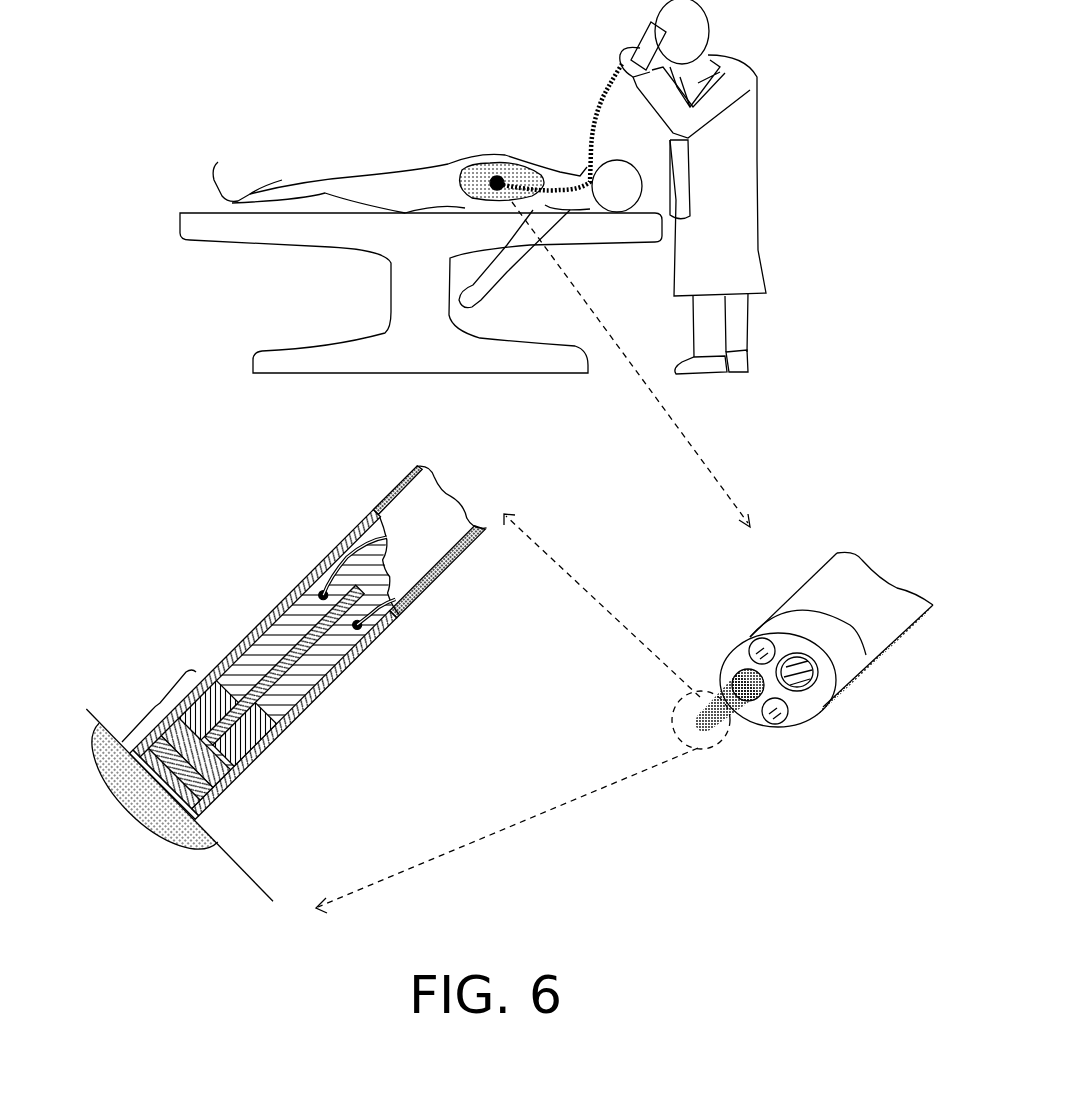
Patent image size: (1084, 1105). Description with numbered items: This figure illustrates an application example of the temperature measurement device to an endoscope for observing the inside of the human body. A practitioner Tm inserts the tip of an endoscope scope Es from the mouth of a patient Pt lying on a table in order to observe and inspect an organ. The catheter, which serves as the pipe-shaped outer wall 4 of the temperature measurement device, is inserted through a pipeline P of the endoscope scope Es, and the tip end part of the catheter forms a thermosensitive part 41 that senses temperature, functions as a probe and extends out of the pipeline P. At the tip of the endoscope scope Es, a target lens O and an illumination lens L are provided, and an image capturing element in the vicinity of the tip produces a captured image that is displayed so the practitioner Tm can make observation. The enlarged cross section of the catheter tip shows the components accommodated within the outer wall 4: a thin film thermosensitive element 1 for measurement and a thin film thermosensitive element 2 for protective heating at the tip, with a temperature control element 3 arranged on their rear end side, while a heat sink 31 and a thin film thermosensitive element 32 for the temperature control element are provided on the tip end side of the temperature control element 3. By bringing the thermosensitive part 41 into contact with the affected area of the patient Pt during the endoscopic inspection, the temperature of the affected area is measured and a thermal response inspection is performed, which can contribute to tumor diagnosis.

The endoscope scope Es is at (607, 101).
The patient Pt is at (512, 162).
The practitioner Tm is at (738, 169).
The pipe-shaped outer wall 4 is at (311, 673).
The thermosensitive part 41 is at (700, 712).
The temperature control element 3 is at (282, 666).
The heat sink 31 is at (195, 752).
The thin film thermosensitive element for the temperature control element 32 is at (181, 768).
The thin film thermosensitive element for protective heating 2 is at (170, 779).
The thin film thermosensitive element for measurement 1 is at (163, 784).
The illumination lens L is at (758, 641).
The pipeline P is at (756, 693).
The target lens O is at (807, 685).